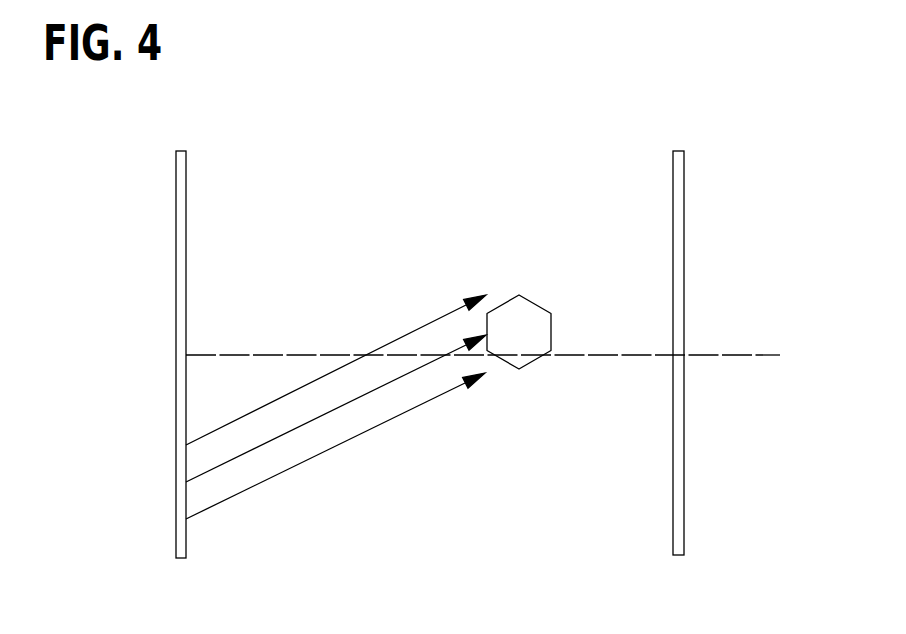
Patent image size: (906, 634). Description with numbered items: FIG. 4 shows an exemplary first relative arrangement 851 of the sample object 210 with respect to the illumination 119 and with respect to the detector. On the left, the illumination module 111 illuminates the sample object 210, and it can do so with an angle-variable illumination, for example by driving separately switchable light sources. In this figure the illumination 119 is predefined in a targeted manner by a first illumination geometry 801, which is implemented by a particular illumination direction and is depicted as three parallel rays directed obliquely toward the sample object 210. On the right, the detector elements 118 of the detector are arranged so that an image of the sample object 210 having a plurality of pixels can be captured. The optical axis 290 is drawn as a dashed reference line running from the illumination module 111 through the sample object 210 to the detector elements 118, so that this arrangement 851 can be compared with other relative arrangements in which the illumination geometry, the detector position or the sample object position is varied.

The illumination module 111 is at (182, 151).
The detector elements 118 is at (678, 558).
The illumination 119 is at (363, 478).
The sample object 210 is at (552, 319).
The optical axis 290 is at (738, 353).
The illumination geometry 801 is at (429, 322).
The arrangement 851 is at (534, 226).